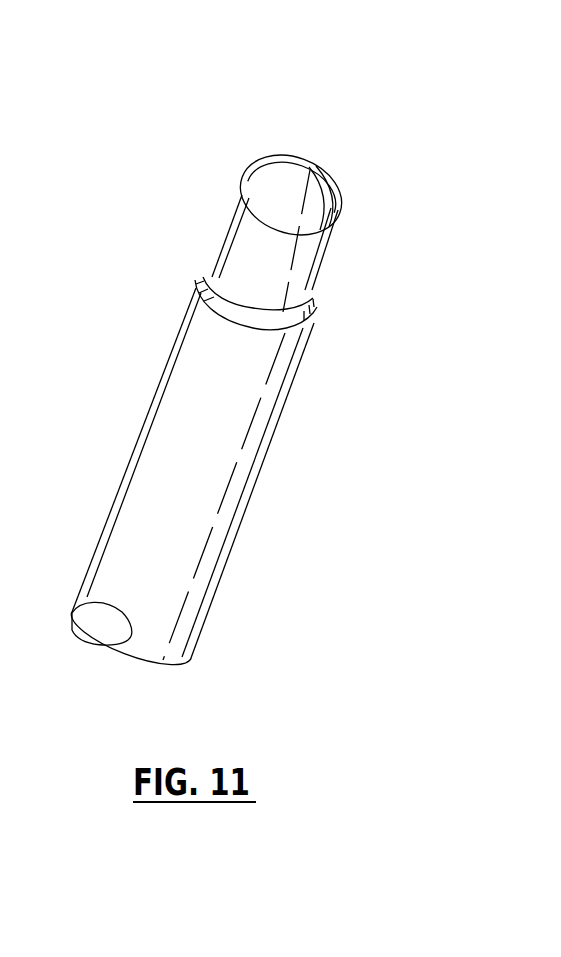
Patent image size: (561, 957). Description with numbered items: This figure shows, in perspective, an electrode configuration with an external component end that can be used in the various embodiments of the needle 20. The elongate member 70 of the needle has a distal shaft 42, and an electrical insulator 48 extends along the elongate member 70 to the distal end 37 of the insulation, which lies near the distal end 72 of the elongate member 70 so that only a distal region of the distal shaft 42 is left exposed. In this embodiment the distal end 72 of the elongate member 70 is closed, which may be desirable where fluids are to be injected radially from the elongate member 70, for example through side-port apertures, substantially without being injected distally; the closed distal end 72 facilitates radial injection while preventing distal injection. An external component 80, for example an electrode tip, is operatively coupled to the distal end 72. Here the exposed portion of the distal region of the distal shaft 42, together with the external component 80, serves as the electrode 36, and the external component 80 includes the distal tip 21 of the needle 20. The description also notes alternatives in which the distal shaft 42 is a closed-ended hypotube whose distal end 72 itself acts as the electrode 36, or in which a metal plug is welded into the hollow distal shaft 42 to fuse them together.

The needle 20 is at (101, 413).
The distal tip 21 is at (270, 173).
The electrode 36 is at (237, 217).
The distal end of the insulation 37 is at (203, 278).
The distal shaft 42 is at (247, 253).
The electrical insulator 48 is at (203, 537).
The elongate member 70 is at (322, 270).
The distal end 72 is at (340, 200).
The external component 80 is at (300, 164).